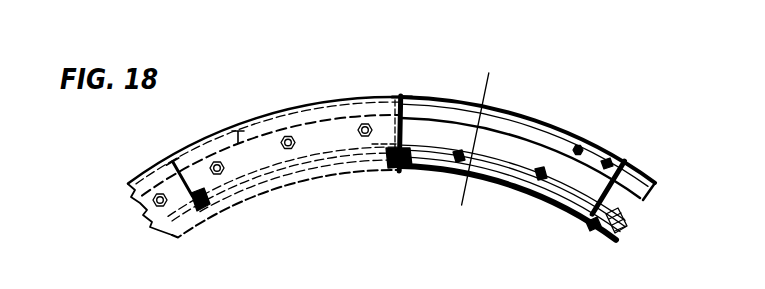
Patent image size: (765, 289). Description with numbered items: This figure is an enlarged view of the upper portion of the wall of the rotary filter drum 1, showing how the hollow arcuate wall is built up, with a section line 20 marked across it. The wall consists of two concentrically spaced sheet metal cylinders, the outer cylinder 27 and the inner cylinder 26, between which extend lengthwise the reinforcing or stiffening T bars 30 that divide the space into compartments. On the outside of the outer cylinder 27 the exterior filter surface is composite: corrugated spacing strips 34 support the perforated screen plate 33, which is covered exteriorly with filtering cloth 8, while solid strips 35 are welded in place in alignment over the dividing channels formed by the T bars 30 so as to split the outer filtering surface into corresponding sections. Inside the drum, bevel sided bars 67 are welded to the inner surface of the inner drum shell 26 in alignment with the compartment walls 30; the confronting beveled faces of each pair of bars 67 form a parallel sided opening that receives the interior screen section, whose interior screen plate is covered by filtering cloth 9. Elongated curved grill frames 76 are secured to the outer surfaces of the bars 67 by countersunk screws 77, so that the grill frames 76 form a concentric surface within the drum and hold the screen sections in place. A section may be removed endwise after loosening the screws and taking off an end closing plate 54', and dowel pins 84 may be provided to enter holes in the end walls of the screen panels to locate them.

The drum 1 is at (432, 128).
The section line 20 is at (490, 81).
The corrugated spacing strips 34 is at (499, 110).
The outer sheet metal cylinder 27 is at (534, 121).
The exterior filtering cloth 8 is at (583, 146).
The perforated screen plate 33 is at (610, 155).
The solid strips 35 is at (644, 176).
The inner sheet metal cylinder 26 is at (500, 158).
The T bars 30 is at (610, 199).
The bevel sided bars 67 is at (622, 218).
The interior filtering cloth 9 is at (443, 168).
The dowel pins 84 is at (458, 172).
The grill frames 76 is at (523, 192).
The countersunk screws 77 is at (594, 227).
The end closing plates 54' is at (257, 184).